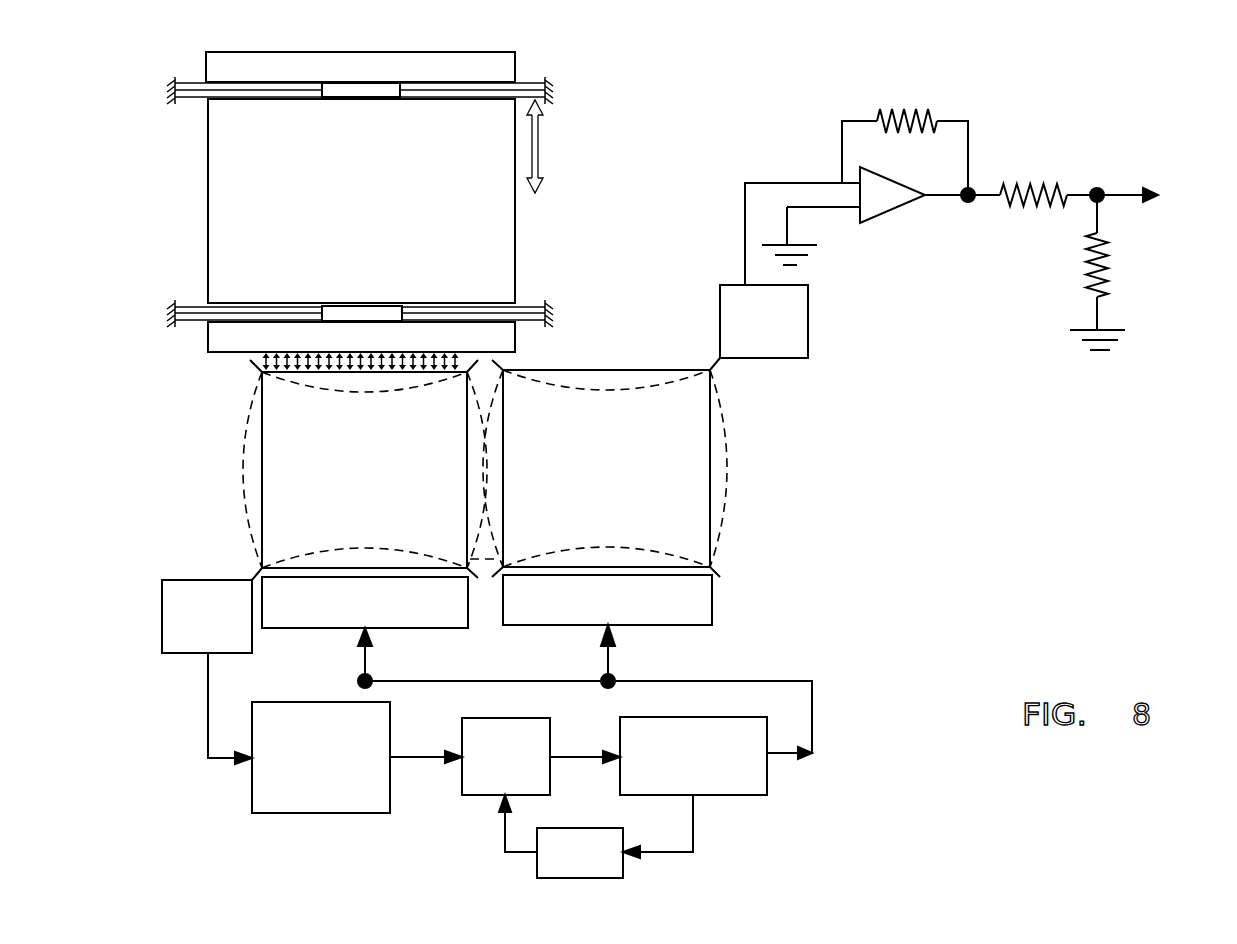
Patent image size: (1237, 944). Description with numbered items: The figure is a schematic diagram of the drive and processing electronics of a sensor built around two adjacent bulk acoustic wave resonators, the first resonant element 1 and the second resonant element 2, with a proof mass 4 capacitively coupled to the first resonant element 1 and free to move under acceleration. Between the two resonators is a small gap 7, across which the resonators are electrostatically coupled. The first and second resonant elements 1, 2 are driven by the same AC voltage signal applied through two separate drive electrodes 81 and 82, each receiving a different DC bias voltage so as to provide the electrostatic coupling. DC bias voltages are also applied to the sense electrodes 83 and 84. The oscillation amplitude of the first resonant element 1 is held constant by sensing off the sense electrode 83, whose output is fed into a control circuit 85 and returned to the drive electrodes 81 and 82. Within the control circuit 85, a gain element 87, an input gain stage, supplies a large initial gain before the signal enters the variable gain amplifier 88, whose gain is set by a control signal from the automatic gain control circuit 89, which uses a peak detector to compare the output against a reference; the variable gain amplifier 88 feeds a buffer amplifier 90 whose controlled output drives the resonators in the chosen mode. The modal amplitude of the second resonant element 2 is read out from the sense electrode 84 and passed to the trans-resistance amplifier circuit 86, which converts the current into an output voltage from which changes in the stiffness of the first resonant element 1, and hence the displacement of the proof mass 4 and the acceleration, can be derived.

The first resonant element 1 is at (292, 474).
The second resonant element 2 is at (692, 478).
The proof mass 4 is at (480, 244).
The coupling gap 7 is at (487, 581).
The drive electrode 81 is at (328, 612).
The drive electrode 82 is at (702, 600).
The sense electrode 83 is at (183, 623).
The sense electrode 84 is at (798, 320).
The control circuit 85 is at (513, 753).
The trans-resistance amplifier circuit 86 is at (932, 216).
The gain element 87 is at (252, 792).
The variable gain amplifier (VGA) 88 is at (477, 796).
The automatic gain control (AGC) circuit 89 is at (611, 843).
The buffer amplifier 90 is at (770, 775).